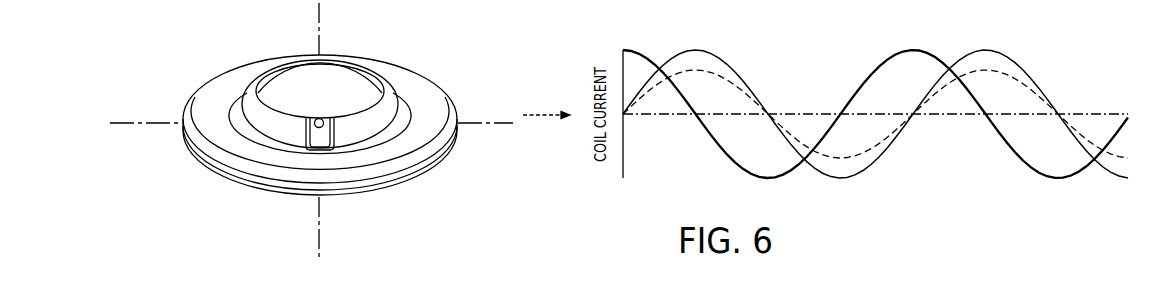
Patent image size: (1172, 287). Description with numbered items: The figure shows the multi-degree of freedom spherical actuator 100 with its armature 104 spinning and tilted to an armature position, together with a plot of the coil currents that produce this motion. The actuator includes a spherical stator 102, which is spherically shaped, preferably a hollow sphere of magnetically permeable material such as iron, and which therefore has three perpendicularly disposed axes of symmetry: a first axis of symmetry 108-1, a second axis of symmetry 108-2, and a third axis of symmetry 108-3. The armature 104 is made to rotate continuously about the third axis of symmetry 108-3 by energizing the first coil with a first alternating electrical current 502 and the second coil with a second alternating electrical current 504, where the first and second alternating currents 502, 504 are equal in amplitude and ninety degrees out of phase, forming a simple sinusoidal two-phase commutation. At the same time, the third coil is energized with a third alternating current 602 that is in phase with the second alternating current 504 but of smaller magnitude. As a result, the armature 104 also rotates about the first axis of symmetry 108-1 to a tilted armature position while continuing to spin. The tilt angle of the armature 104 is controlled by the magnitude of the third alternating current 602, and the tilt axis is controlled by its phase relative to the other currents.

The multi-degree of freedom spherical actuator 100 is at (286, 130).
The spherical stator 102 is at (337, 75).
The armature 104 is at (413, 72).
The first axis of symmetry 108-1 is at (475, 122).
The second axis of symmetry 108-2 is at (320, 128).
The third axis of symmetry 108-3 is at (317, 43).
The first alternating electrical current 502 is at (649, 60).
The second alternating electrical current 504 is at (738, 74).
The third alternating current 602 is at (701, 70).